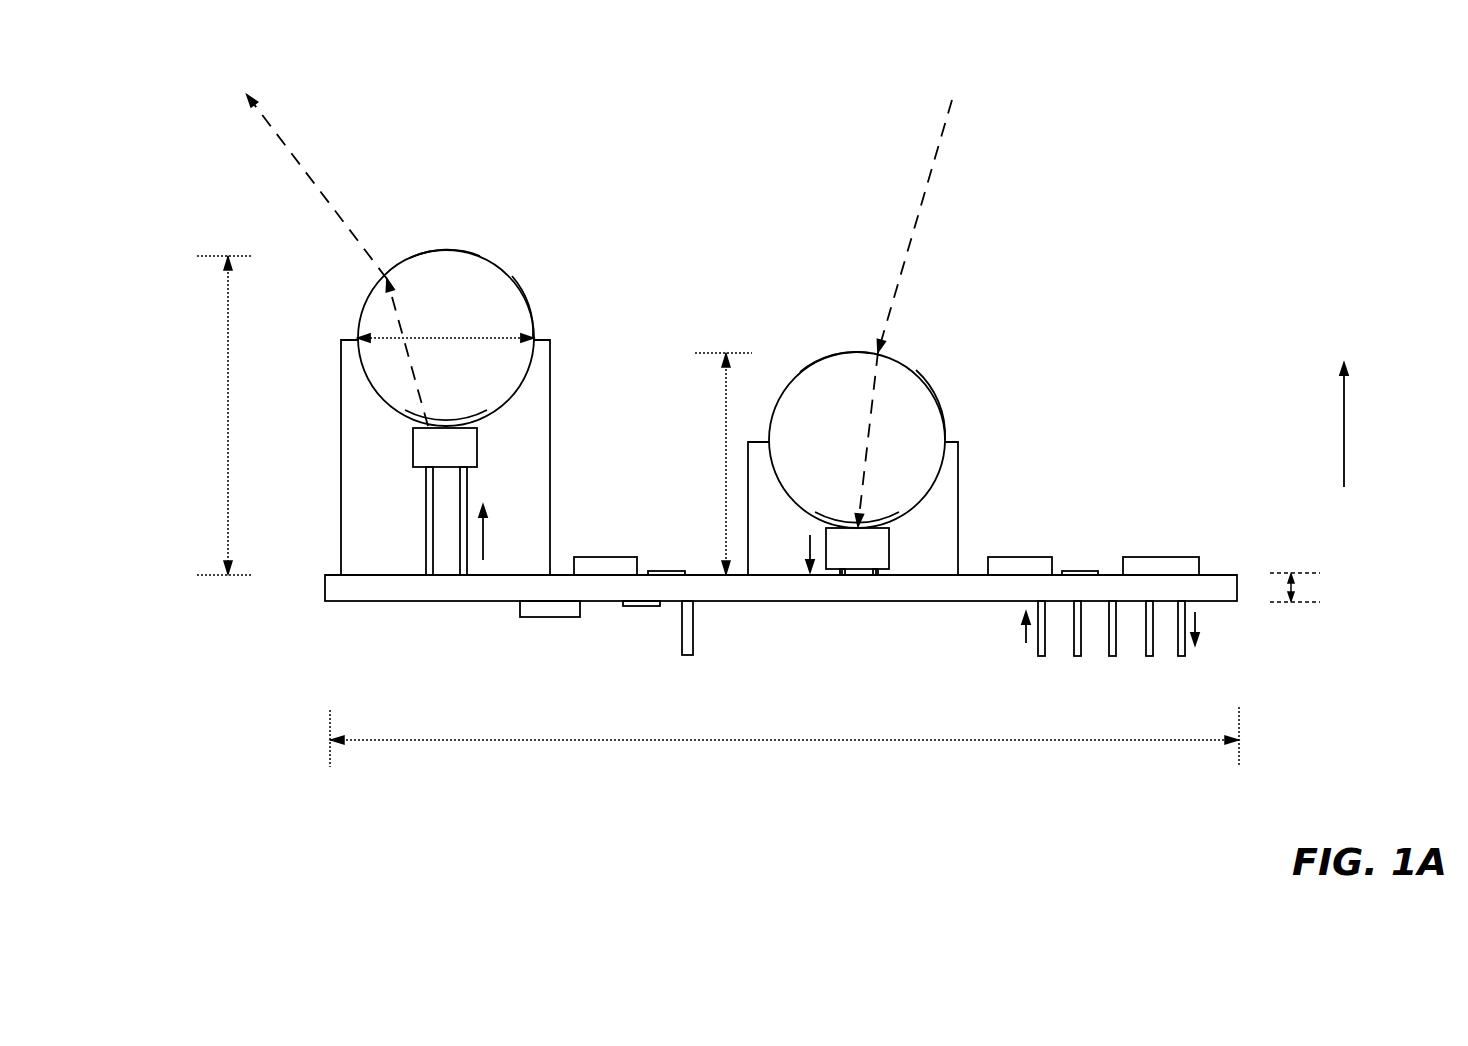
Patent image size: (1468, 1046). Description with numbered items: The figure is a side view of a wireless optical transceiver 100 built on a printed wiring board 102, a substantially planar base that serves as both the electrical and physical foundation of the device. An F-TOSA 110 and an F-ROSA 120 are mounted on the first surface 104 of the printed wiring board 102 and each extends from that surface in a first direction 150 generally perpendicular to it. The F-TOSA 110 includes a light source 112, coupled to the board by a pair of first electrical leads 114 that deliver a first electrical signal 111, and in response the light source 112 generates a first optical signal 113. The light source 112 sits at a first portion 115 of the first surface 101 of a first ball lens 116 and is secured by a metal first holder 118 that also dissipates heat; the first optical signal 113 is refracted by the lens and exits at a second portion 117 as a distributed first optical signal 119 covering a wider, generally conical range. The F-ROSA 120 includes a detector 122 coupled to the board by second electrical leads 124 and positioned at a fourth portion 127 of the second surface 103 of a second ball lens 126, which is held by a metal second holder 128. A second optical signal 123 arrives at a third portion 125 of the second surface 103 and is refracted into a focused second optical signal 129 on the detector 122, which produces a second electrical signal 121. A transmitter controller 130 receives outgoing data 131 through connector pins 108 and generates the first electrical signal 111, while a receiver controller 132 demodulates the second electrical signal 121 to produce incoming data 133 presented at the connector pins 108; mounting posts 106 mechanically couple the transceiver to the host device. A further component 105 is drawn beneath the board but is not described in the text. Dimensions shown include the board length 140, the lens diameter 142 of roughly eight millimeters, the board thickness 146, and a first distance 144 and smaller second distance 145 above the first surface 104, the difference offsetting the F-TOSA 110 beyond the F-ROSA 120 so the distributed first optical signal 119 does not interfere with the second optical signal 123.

The wireless optical transceiver 100 is at (761, 429).
The first surface 101 is at (512, 276).
The printed wiring board 102 is at (1230, 585).
The second surface 103 is at (916, 370).
The first surface 104 is at (1215, 575).
The electronic component on bottom of substrate 105 is at (457, 603).
The mounting posts 106 is at (688, 656).
The connector pins 108 is at (1078, 656).
The F-TOSA 110 is at (445, 361).
The first electrical signal 111 is at (484, 538).
The light source 112 is at (413, 455).
The first optical signal 113 is at (400, 325).
The first electrical leads 114 is at (463, 565).
The first portion 115 is at (470, 423).
The first ball lens 116 is at (518, 318).
The second portion 117 is at (447, 250).
The first holder 118 is at (541, 340).
The distributed first optical signal 119 is at (322, 190).
The F-ROSA 120 is at (876, 367).
The second electrical signal 121 is at (810, 548).
The detector 122 is at (889, 540).
The second optical signal 123 is at (912, 235).
The second electrical leads 124 is at (876, 576).
The third portion 125 is at (862, 352).
The second ball lens 126 is at (930, 408).
The fourth portion 127 is at (848, 527).
The second holder 128 is at (948, 442).
The focused second optical signal 129 is at (866, 445).
The transmitter controller 130 is at (630, 557).
The outgoing data 131 is at (1026, 630).
The receiver controller 132 is at (1015, 558).
The incoming data 133 is at (1195, 625).
The length 140 is at (766, 741).
The diameter 142 is at (365, 338).
The first distance 144 is at (228, 450).
The second distance 145 is at (726, 493).
The PWB thickness 146 is at (1293, 587).
The first direction 150 is at (1344, 438).